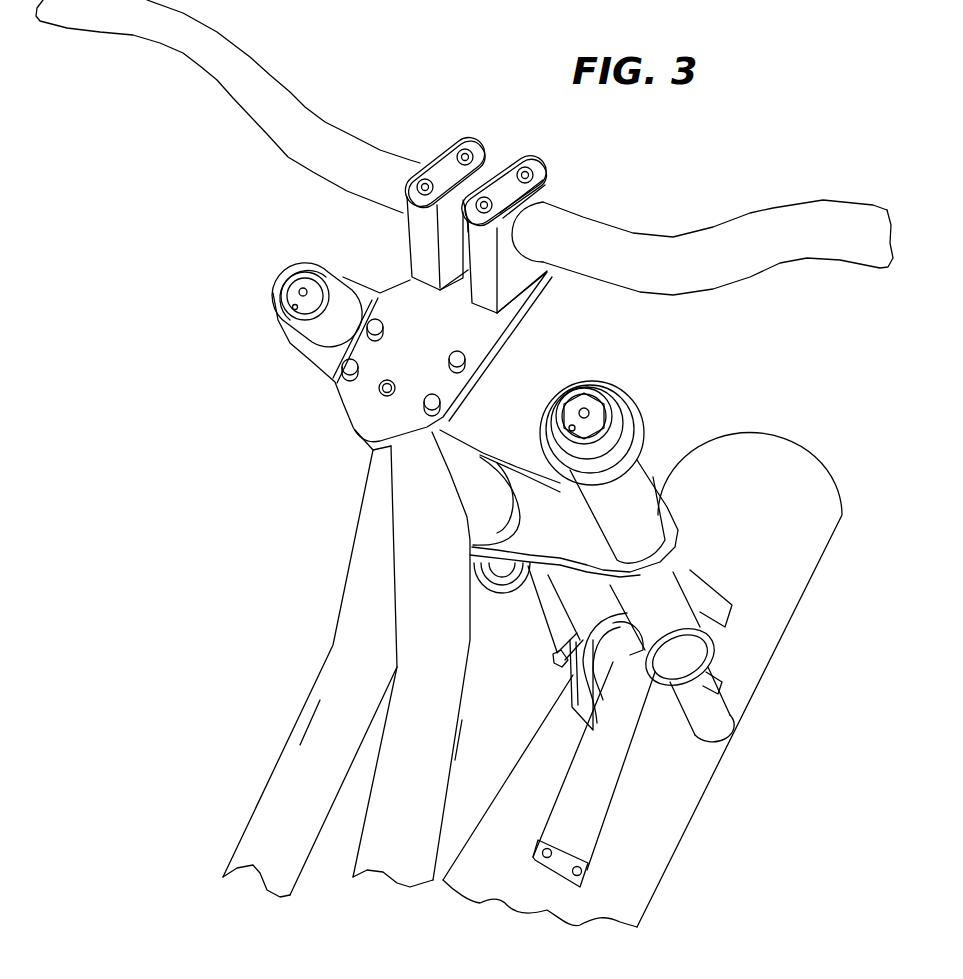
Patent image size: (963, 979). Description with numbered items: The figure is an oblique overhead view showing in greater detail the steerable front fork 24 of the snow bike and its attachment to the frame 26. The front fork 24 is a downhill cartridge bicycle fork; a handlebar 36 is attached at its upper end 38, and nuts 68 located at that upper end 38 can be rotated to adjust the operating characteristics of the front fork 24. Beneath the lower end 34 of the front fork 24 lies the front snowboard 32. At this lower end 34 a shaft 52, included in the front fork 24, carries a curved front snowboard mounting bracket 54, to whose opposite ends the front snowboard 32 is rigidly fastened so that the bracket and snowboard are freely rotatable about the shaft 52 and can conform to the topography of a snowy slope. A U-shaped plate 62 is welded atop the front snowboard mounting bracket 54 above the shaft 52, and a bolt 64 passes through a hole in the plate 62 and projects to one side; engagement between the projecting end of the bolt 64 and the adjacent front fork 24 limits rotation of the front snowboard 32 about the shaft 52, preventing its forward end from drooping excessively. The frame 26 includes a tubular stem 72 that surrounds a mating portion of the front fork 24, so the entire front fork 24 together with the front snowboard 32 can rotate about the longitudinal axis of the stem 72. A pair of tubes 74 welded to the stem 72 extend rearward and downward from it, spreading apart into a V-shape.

The front fork 24 is at (640, 483).
The frame 26 is at (355, 546).
The front snowboard 32 is at (777, 440).
The lower end 34 is at (592, 603).
The handlebar 36 is at (257, 67).
The upper end 38 is at (543, 278).
The shaft 52 is at (722, 684).
The front snowboard mounting bracket 54 is at (600, 773).
The U-shaped plate 62 is at (567, 703).
The bolt 64 is at (560, 660).
The nuts 68 is at (285, 294).
The tubular stem 72 is at (497, 520).
The tubes 74 is at (285, 747).